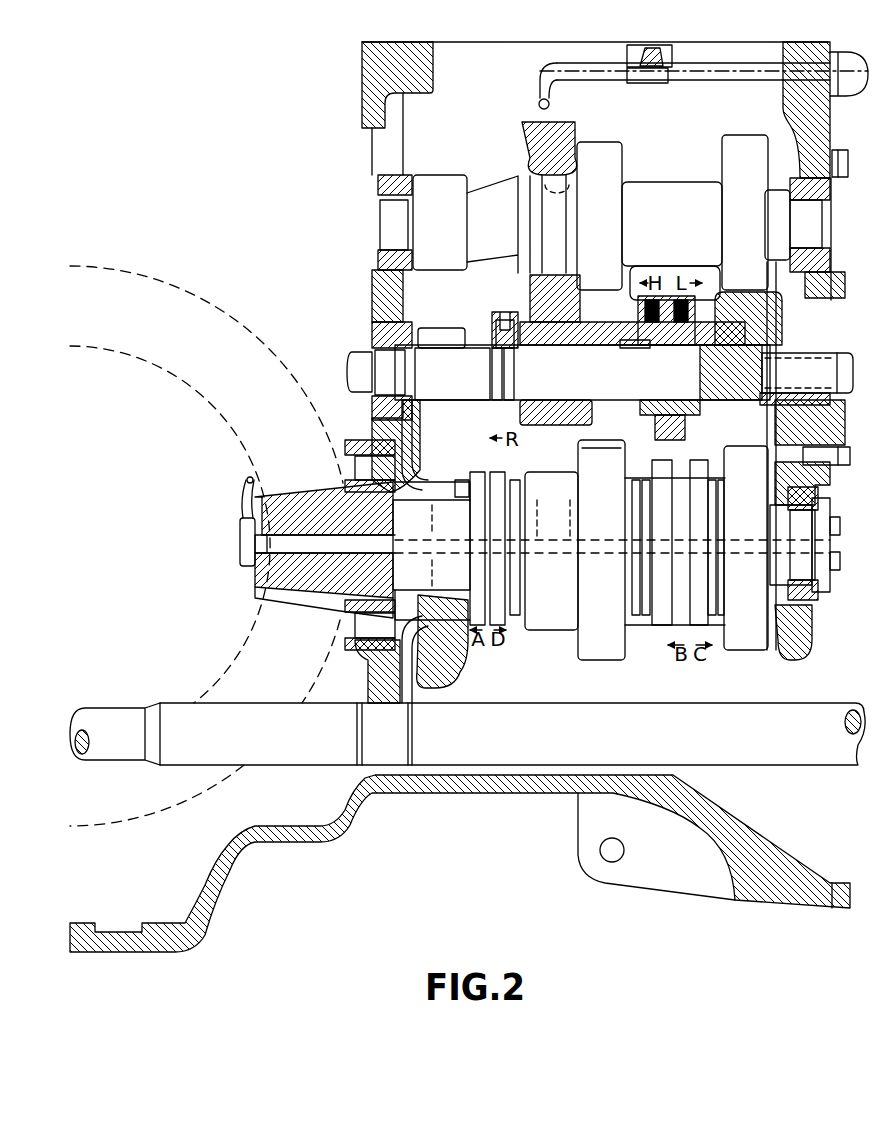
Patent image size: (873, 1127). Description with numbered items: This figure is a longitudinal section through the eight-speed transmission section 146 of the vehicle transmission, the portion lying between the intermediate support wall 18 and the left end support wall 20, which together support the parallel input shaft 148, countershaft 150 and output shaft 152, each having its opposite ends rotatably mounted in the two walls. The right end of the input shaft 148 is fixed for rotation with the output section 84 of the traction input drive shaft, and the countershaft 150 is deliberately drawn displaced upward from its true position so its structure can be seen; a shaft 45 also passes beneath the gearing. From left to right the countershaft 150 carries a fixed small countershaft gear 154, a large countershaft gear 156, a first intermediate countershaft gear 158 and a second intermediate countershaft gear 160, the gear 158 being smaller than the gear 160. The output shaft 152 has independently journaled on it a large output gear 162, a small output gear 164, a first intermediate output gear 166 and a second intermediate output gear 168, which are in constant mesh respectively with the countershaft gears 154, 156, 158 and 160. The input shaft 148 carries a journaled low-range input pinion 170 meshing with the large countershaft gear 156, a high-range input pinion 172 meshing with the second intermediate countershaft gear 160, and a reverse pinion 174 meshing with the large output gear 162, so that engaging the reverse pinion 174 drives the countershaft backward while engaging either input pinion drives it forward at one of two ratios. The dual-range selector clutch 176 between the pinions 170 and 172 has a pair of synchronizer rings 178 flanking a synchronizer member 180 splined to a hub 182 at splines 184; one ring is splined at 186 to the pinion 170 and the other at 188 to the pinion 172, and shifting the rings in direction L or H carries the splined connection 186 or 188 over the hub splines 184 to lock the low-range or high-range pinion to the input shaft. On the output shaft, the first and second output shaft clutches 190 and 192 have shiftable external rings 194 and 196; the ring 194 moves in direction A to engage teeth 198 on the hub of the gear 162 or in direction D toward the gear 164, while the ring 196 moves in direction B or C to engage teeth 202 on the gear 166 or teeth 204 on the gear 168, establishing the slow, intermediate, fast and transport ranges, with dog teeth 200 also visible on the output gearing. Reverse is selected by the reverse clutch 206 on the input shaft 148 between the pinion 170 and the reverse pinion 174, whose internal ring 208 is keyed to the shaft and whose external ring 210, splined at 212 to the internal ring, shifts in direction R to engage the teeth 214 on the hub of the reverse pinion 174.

The intermediate support wall 18 is at (827, 42).
The left end support wall 20 is at (408, 48).
The shaft 45 is at (467, 734).
The output section of the traction input drive shaft 84 is at (811, 378).
The eight-speed transmission section 146 is at (652, 42).
The input shaft 148 is at (601, 376).
The countershaft 150 is at (684, 228).
The output shaft 152 is at (442, 575).
The small countershaft gear 154 is at (445, 178).
The large countershaft gear 156 is at (548, 125).
The first intermediate countershaft gear 158 is at (600, 146).
The second intermediate countershaft gear 160 is at (740, 140).
The large output gear 162 is at (452, 680).
The small output gear 164 is at (545, 630).
The first intermediate output gear 166 is at (595, 650).
The second intermediate output gear 168 is at (743, 650).
The low-range input pinion 170 is at (533, 420).
The high-range input pinion 172 is at (731, 372).
The reverse pinion 174 is at (432, 330).
The dual-range selector clutch 176 is at (634, 306).
The synchronizer rings 178 is at (640, 432).
The synchronizer member 180 is at (622, 458).
The hub 182 is at (672, 347).
The splines 184 is at (645, 346).
The splined connection 186 is at (625, 327).
The splined connection 188 is at (728, 305).
The first output shaft clutch 190 is at (477, 470).
The second output shaft clutch 192 is at (712, 470).
The external ring 194 is at (498, 472).
The external ring 196 is at (680, 464).
The teeth 198 is at (464, 497).
The teeth 200 is at (528, 487).
The teeth 202 is at (632, 486).
The teeth 204 is at (722, 486).
The reverse clutch 206 is at (505, 312).
The internal ring 208 is at (518, 348).
The external ring 210 is at (492, 318).
The splines 212 is at (518, 382).
The teeth 214 is at (452, 374).